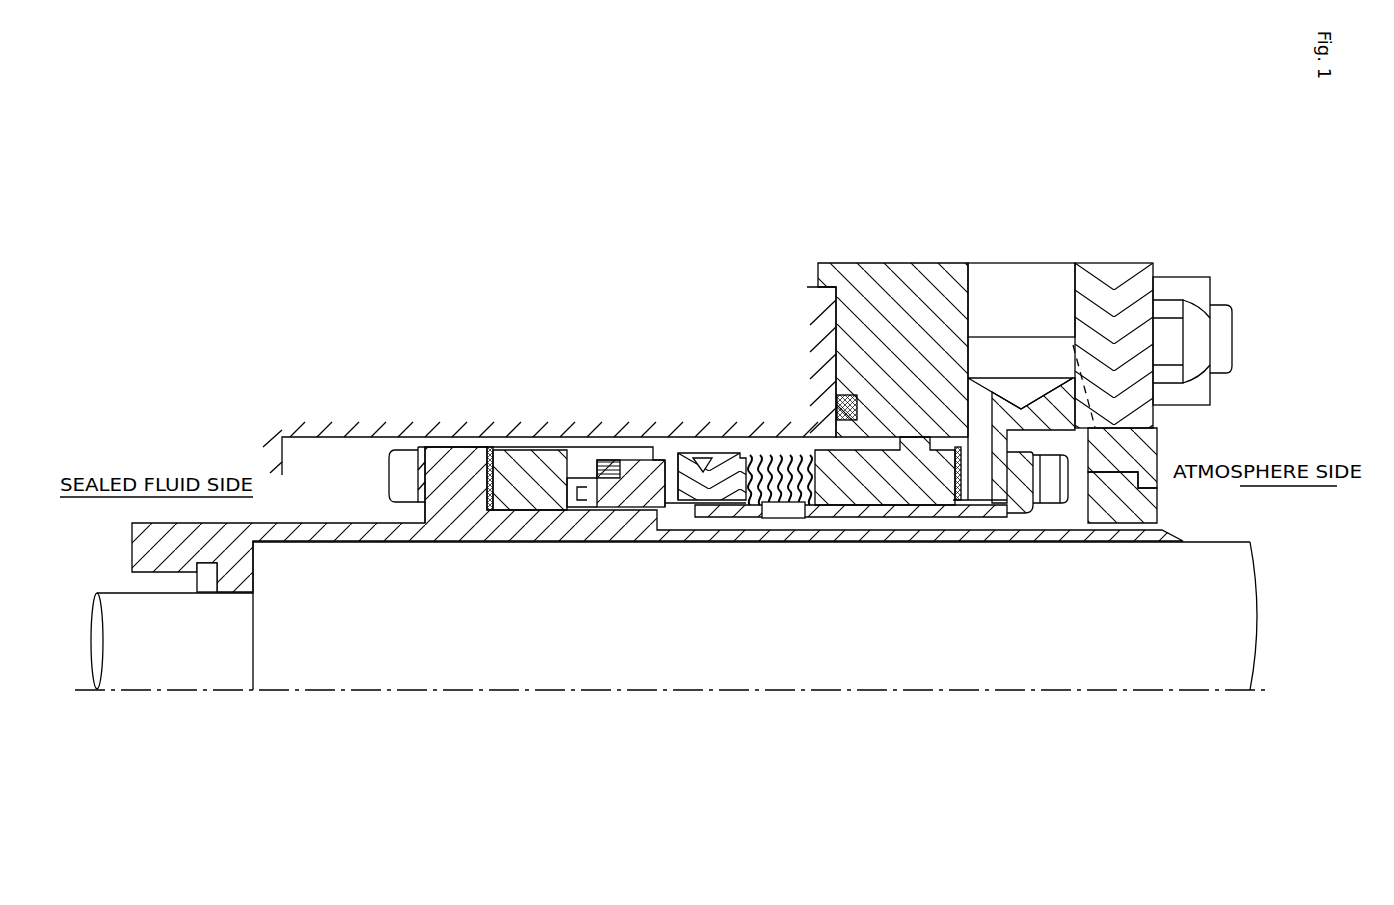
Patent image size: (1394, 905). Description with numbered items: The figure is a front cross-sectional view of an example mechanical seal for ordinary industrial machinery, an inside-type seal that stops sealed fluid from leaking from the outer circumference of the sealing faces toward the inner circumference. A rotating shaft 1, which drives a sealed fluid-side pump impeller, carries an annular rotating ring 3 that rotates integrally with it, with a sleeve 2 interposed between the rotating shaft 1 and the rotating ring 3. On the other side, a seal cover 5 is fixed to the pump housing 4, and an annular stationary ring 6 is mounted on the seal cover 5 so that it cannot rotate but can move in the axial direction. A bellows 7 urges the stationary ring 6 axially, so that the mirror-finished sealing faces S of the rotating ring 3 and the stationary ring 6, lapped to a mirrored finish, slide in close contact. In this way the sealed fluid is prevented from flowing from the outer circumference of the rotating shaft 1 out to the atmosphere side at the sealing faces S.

The rotating shaft 1 is at (357, 650).
The sleeve 2 is at (950, 533).
The rotating ring 3 is at (645, 468).
The pump housing 4 is at (507, 378).
The seal cover 5 is at (868, 263).
The stationary ring 6 is at (680, 455).
The bellows 7 is at (748, 455).
The sealing faces S is at (660, 487).